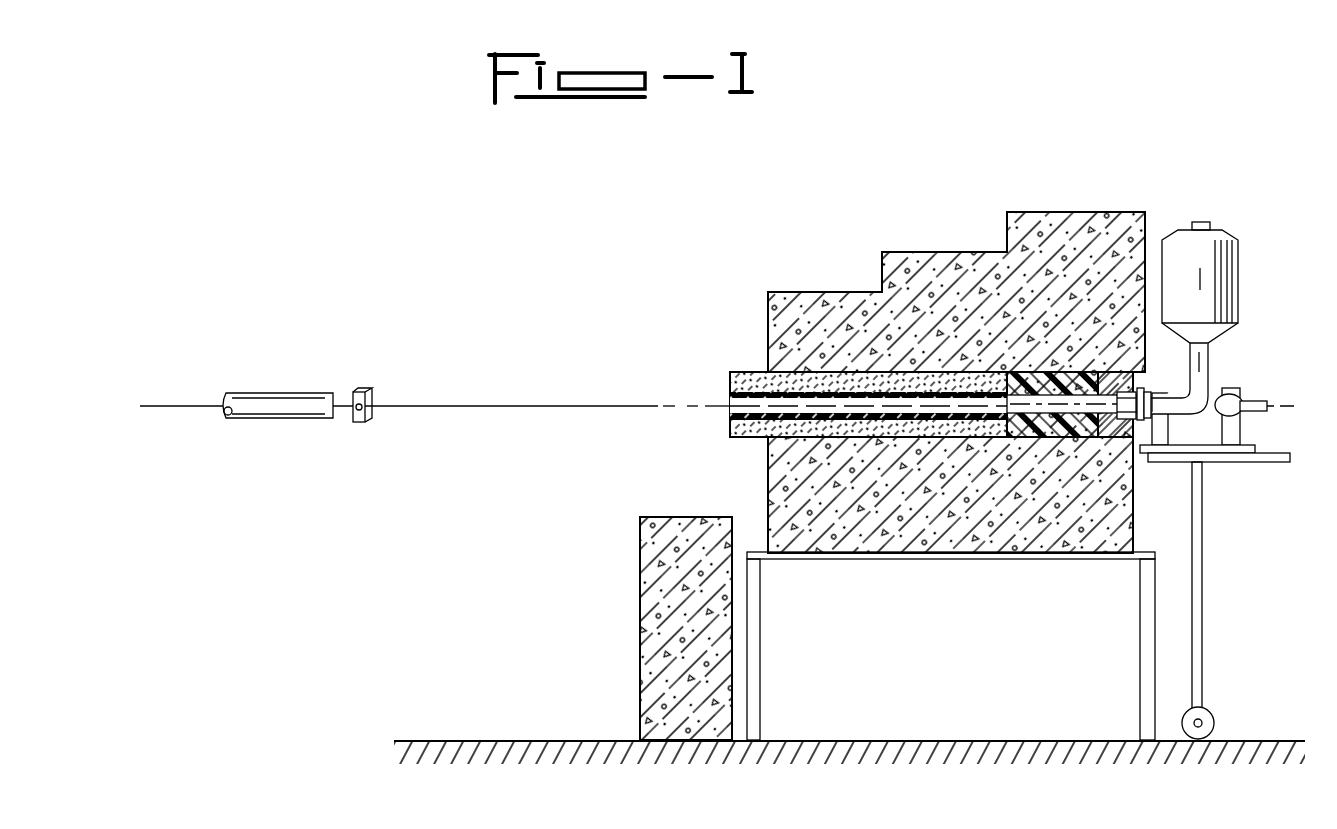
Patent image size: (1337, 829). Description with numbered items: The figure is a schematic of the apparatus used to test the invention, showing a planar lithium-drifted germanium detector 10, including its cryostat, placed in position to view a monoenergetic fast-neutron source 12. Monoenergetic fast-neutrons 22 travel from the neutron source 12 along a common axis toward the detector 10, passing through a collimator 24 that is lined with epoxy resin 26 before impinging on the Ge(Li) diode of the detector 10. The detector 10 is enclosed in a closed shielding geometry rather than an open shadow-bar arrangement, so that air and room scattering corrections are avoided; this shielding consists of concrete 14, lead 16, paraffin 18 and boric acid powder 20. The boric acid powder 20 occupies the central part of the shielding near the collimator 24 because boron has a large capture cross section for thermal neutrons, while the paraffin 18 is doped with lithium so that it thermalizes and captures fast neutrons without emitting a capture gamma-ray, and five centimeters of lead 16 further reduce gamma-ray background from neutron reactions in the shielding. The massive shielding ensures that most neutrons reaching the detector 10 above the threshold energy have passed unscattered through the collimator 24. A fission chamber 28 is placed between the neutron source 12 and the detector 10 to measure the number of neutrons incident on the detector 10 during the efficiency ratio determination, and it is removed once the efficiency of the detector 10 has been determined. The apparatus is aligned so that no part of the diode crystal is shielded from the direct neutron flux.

The planar lithium-drifted germanium detector 10 is at (1200, 296).
The monoenergetic fast-neutron source 12 is at (266, 396).
The concrete 14 is at (1012, 312).
The lead 16 is at (1115, 372).
The paraffin 18 is at (1065, 372).
The boric acid powder 20 is at (905, 333).
The monoenergetic fast-neutrons 22 is at (582, 383).
The collimator 24 is at (760, 404).
The epoxy resin 26 is at (836, 414).
The fission chamber 28 is at (362, 421).